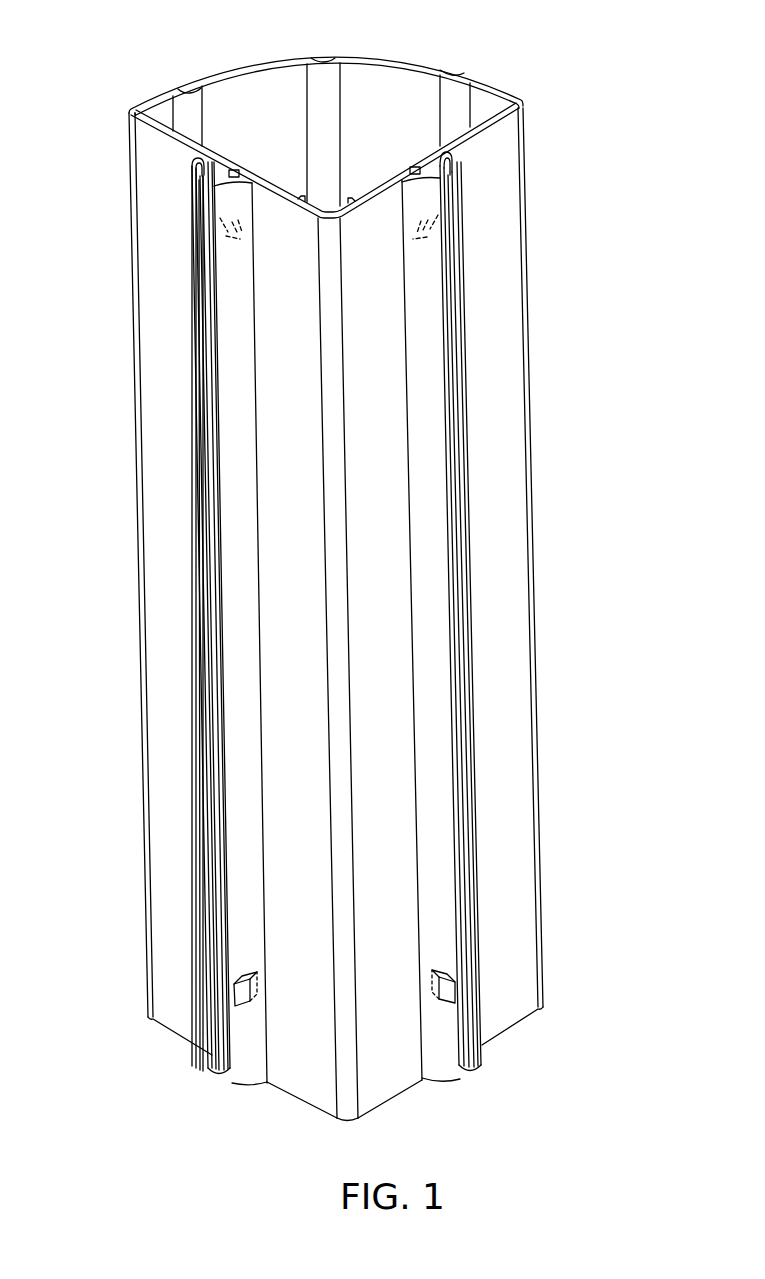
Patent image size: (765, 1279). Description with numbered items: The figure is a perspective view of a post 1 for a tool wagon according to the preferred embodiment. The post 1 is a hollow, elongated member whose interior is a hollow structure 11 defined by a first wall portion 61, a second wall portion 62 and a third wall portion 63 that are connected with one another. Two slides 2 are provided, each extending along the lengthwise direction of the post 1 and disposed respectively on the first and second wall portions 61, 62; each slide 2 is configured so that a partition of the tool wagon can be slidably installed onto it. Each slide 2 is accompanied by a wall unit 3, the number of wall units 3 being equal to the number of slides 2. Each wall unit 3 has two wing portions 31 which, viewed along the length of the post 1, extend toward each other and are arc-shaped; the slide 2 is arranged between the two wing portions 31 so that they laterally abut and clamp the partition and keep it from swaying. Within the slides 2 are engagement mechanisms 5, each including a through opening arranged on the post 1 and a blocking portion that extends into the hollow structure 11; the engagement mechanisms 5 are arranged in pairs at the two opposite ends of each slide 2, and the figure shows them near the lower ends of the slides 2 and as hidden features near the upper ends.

The post 1 is at (548, 310).
The slide 2 is at (436, 154).
The wall unit 3 is at (180, 312).
The wing portion 31 is at (460, 164).
The engagement mechanism 5 is at (240, 1021).
The hollow structure 11 is at (384, 102).
The first wall portion 61 is at (151, 187).
The second wall portion 62 is at (513, 247).
The third wall portion 63 is at (258, 95).